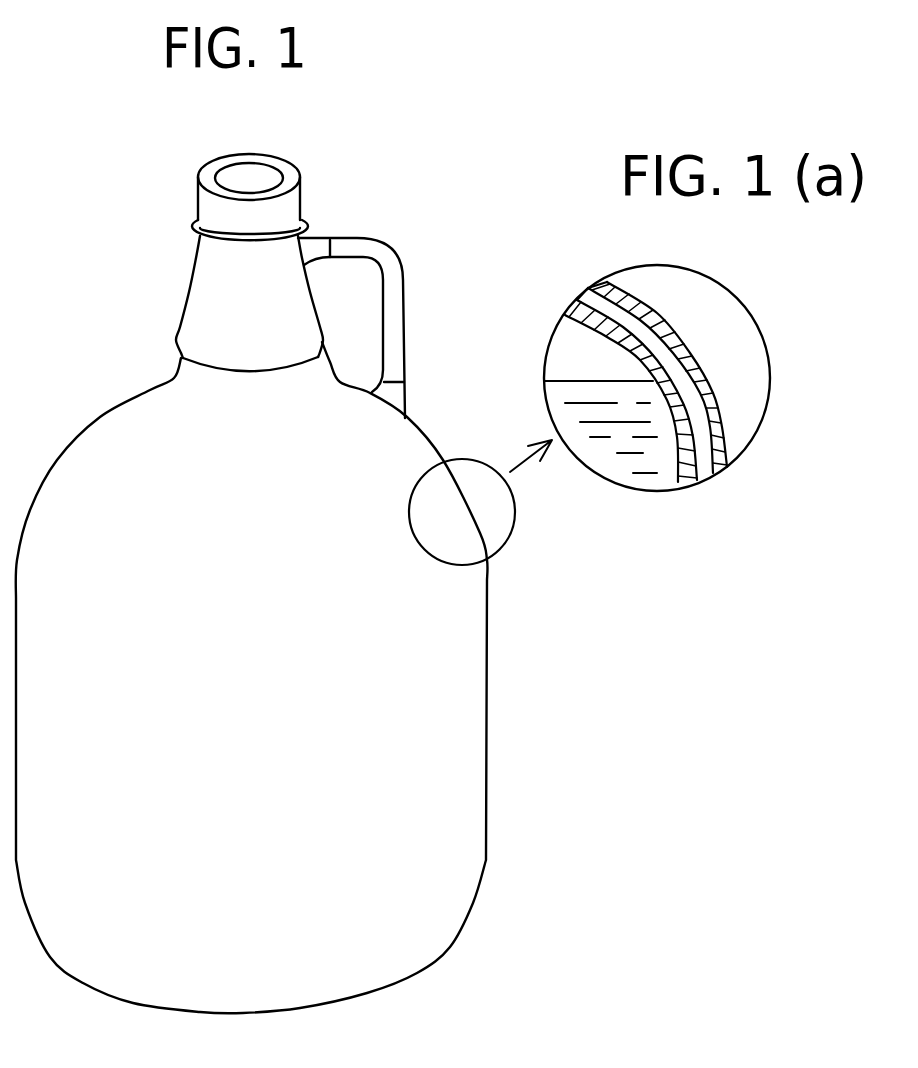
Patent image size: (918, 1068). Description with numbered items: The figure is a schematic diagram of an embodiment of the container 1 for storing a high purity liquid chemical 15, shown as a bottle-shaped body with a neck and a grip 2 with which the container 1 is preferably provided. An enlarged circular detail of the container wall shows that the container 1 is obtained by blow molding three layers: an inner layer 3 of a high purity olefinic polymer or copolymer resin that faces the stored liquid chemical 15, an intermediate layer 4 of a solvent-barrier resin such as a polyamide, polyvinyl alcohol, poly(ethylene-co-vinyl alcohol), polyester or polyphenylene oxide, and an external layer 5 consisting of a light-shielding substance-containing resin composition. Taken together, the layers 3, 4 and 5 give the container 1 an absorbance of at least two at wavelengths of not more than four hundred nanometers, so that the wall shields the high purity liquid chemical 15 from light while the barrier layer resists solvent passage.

In FIG. 1, the container 1 is at (523, 846).
In FIG. 1, the grip 2 is at (387, 263).
The inner layer 3 is at (684, 465).
The intermediate layer 4 is at (705, 462).
The external layer 5 is at (721, 458).
The high purity liquid chemical 15 is at (620, 442).